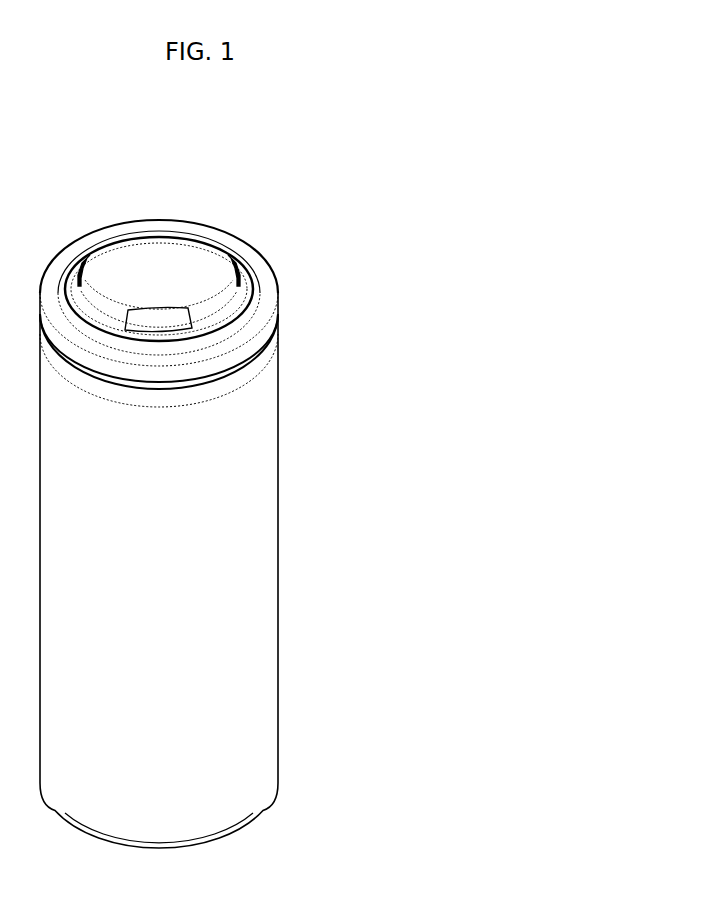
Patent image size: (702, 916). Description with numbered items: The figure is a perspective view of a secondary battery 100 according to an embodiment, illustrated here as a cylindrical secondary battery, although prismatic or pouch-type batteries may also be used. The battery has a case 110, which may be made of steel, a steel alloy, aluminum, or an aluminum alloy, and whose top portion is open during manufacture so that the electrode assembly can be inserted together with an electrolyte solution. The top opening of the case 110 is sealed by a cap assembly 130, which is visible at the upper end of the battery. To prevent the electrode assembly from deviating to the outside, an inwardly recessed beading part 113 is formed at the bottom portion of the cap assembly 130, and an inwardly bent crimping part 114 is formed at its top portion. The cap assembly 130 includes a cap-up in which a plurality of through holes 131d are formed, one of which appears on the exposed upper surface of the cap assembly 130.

The secondary battery 100 is at (264, 181).
The case 110 is at (280, 555).
The beading part 113 is at (280, 335).
The crimping part 114 is at (266, 262).
The cap assembly 130 is at (161, 268).
The through holes 131d is at (142, 318).